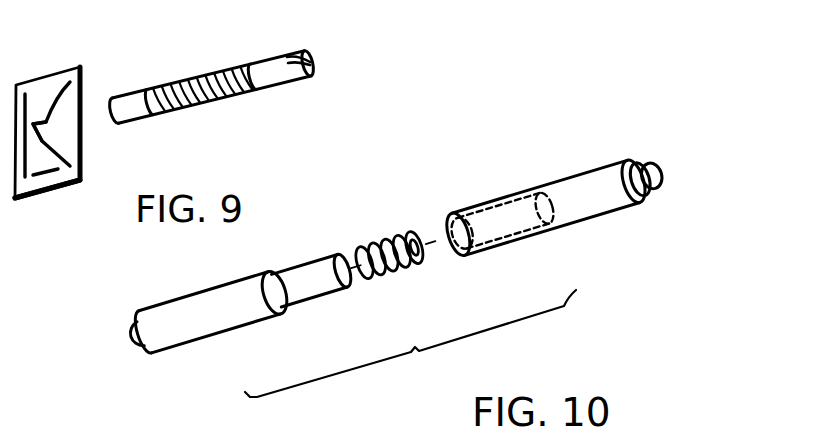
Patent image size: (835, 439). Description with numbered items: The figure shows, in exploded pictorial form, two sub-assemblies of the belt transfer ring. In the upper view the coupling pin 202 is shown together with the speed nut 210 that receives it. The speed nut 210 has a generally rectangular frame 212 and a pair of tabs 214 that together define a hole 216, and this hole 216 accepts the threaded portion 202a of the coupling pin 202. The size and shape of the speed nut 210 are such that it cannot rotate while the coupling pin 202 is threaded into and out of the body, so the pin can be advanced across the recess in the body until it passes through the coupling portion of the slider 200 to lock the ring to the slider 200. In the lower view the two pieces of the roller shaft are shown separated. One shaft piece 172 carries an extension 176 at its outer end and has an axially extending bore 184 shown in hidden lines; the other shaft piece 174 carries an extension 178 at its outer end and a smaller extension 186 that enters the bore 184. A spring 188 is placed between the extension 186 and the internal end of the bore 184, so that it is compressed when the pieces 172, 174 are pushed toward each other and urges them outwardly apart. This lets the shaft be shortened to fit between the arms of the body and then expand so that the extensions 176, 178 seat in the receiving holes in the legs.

In FIG. 9, the speed nut 210 is at (77, 68).
In FIG. 9, the generally rectangular frame 212 is at (60, 182).
In FIG. 9, the tabs 214 is at (60, 89).
In FIG. 9, the hole 216 is at (40, 133).
In FIG. 9, the coupling pin 202 is at (285, 46).
In FIG. 9, the threaded portion 202a is at (200, 72).
In FIG. 10, the shaft piece 172 is at (605, 210).
In FIG. 10, the shaft piece 174 is at (175, 345).
In FIG. 10, the extension 176 is at (642, 163).
In FIG. 10, the extension 178 is at (127, 339).
In FIG. 10, the axially extending bore 184 is at (518, 193).
In FIG. 10, the extension 186 is at (318, 291).
In FIG. 10, the spring 188 is at (412, 230).
In FIG. 10, the slider 200 is at (410, 364).